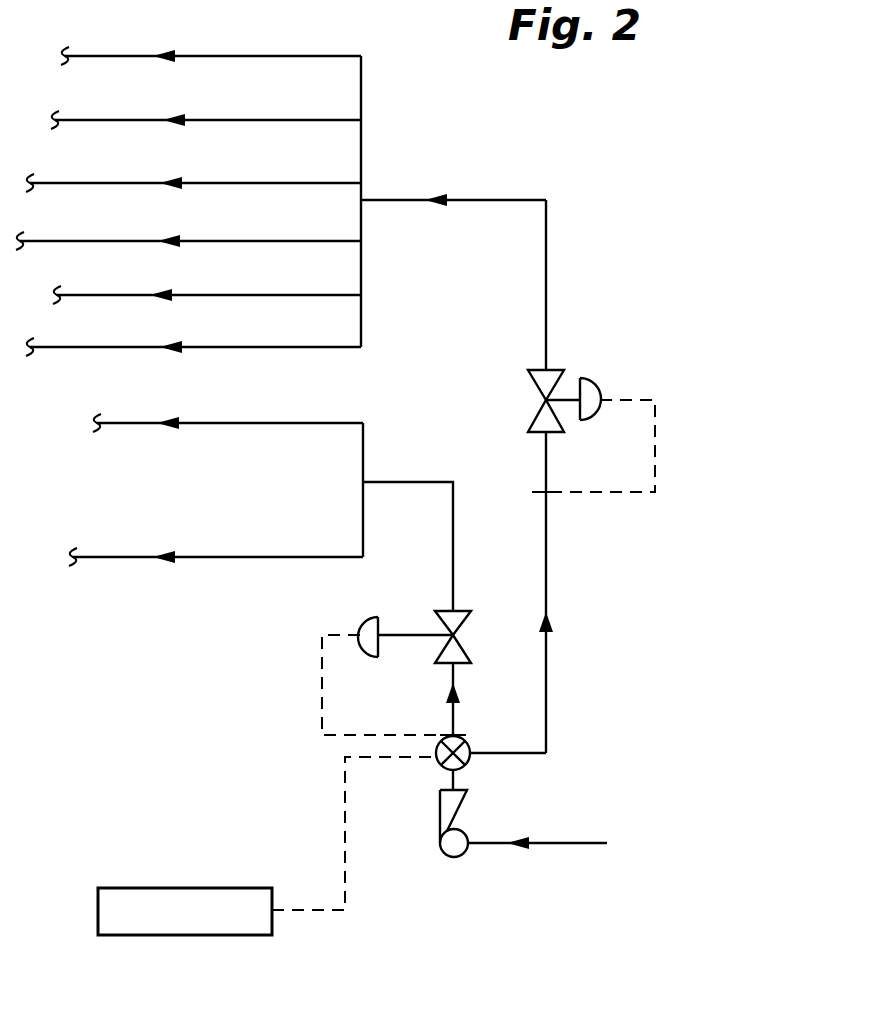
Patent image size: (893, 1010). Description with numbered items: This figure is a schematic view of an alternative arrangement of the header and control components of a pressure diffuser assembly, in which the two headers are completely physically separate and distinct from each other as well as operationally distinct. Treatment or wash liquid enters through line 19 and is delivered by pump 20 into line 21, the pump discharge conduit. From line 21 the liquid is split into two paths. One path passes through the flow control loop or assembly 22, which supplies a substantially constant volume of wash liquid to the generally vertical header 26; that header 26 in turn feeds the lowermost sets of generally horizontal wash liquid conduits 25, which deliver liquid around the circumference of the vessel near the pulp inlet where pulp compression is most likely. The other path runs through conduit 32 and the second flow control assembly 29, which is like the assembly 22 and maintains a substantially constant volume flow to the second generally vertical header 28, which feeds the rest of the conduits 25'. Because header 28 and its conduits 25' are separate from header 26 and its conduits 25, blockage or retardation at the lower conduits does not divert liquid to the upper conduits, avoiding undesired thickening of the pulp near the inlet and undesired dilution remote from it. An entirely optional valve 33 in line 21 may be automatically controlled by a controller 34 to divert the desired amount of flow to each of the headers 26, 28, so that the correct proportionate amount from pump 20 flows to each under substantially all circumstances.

The line 19 is at (563, 843).
The pump 20 is at (473, 830).
The line 21 is at (460, 778).
The flow control loop or assembly 22 is at (328, 750).
The wash liquid conduits 25 is at (216, 490).
The conduits 25' is at (188, 183).
The generally vertical header 26 is at (363, 453).
The second generally vertical header 28 is at (361, 78).
The second flow control assembly 29 is at (652, 386).
The conduit 32 is at (546, 588).
The valve 33 is at (443, 764).
The controller 34 is at (177, 935).